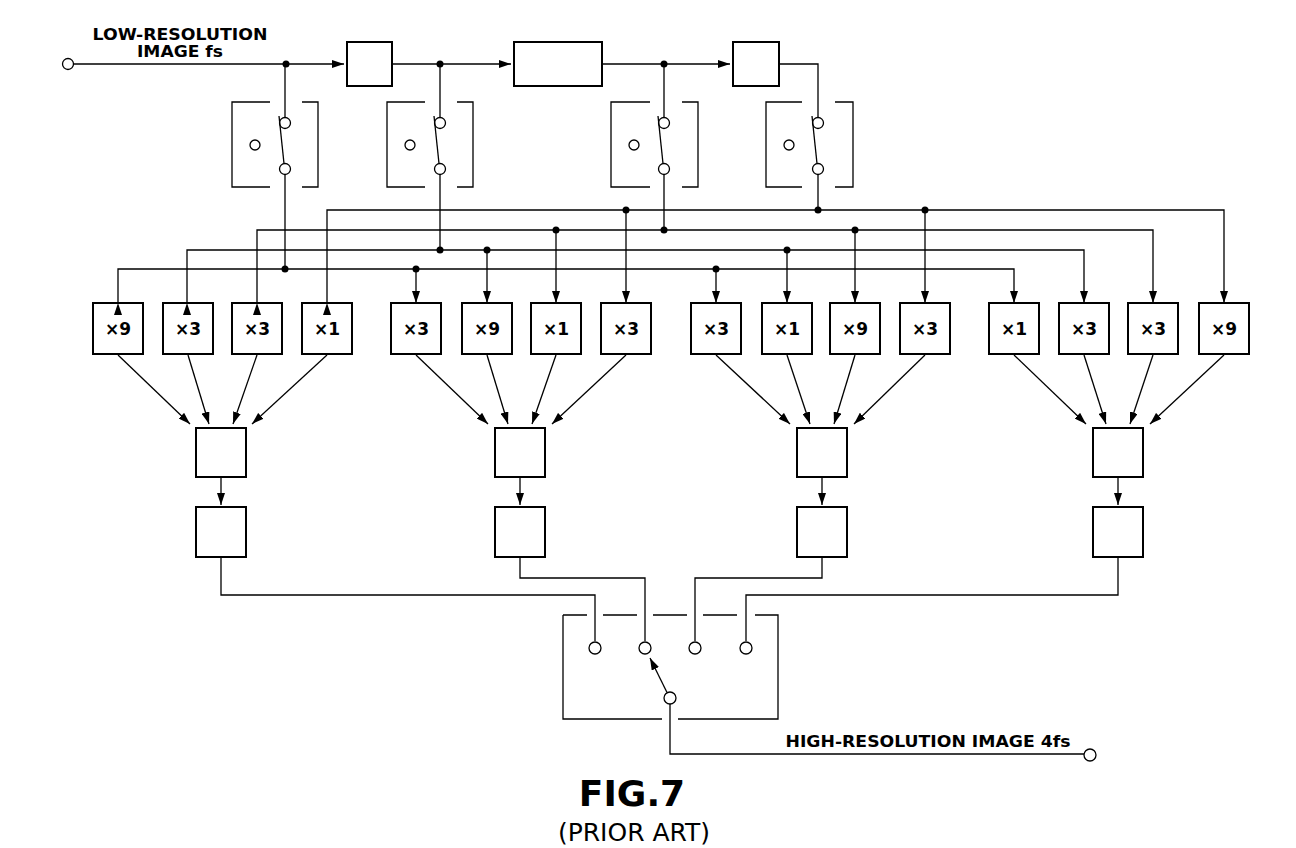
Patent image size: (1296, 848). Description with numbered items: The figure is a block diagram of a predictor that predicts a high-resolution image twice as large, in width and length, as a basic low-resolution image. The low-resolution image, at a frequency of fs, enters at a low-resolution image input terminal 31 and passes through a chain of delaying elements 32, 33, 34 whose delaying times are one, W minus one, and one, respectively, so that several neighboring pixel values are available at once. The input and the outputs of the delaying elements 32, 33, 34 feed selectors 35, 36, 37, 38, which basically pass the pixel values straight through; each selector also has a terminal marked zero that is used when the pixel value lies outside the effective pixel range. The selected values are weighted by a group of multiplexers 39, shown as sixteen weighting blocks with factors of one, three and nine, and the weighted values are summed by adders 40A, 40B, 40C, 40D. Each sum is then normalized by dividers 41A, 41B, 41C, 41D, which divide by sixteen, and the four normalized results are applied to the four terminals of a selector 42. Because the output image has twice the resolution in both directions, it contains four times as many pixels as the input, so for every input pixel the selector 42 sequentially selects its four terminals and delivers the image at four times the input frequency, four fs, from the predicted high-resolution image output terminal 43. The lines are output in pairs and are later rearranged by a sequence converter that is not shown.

The low-resolution image input terminal 31 is at (67, 70).
The delaying element 32 is at (393, 50).
The delaying element 33 is at (603, 50).
The delaying element 34 is at (780, 50).
The selector 35 is at (318, 152).
The selector 36 is at (473, 152).
The selector 37 is at (698, 152).
The selector 38 is at (853, 152).
The group of multiplexers 39 is at (155, 256).
The adder 40A is at (196, 457).
The adder 40B is at (495, 457).
The adder 40C is at (797, 457).
The adder 40D is at (1093, 457).
The divider 41A is at (196, 533).
The divider 41B is at (495, 533).
The divider 41C is at (797, 533).
The divider 41D is at (1093, 533).
The selector 42 is at (563, 670).
The predicted high-resolution image output terminal 43 is at (1093, 749).